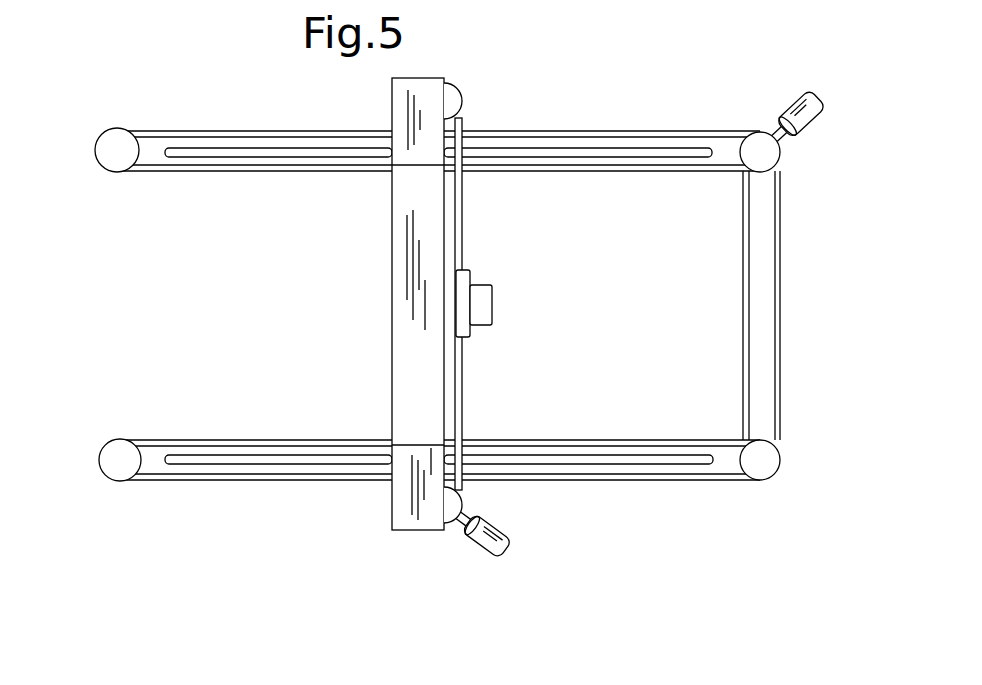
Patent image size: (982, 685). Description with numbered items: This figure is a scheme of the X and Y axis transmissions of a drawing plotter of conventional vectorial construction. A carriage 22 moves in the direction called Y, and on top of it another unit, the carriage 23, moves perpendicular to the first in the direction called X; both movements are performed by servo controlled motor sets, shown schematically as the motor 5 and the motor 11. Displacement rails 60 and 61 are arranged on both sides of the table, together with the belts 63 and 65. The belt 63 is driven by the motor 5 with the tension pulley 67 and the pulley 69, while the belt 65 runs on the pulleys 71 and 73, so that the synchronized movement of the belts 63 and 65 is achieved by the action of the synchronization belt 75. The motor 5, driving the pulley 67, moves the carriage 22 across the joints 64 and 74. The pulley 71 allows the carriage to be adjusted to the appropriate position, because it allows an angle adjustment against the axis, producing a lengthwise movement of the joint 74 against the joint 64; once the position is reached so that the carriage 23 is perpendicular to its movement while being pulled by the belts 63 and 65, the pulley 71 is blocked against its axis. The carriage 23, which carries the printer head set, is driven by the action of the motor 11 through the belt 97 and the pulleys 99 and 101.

The motor 5 is at (829, 113).
The motor 11 is at (507, 547).
The carriage 22 is at (418, 295).
The carriage 23 is at (472, 274).
The displacement rail 60 is at (245, 148).
The displacement rail 61 is at (226, 462).
The belt 63 is at (665, 131).
The joint 64 is at (391, 172).
The belt 65 is at (665, 482).
The tension pulley 67 is at (763, 157).
The pulley 69 is at (96, 157).
The pulley 71 is at (763, 460).
The pulley 73 is at (101, 466).
The joint 74 is at (391, 440).
The synchronization belt 75 is at (782, 240).
The belt 97 is at (464, 382).
The pulley 99 is at (460, 505).
The pulley 101 is at (454, 101).